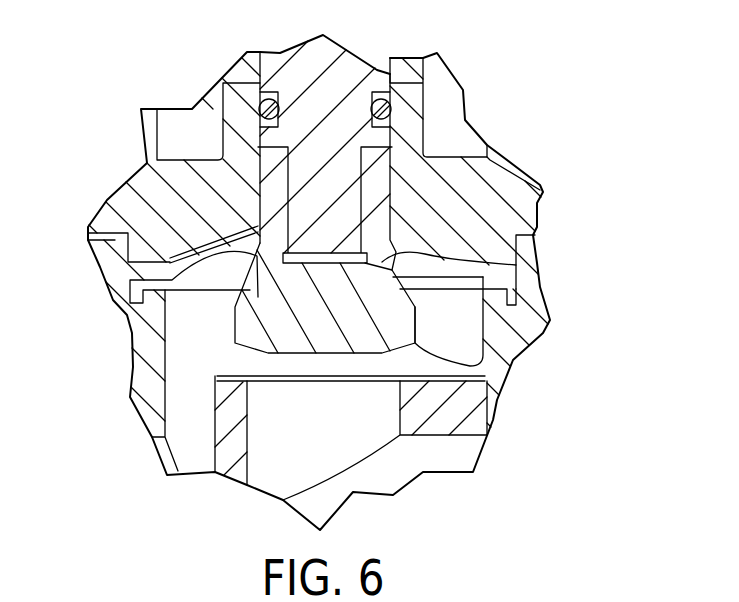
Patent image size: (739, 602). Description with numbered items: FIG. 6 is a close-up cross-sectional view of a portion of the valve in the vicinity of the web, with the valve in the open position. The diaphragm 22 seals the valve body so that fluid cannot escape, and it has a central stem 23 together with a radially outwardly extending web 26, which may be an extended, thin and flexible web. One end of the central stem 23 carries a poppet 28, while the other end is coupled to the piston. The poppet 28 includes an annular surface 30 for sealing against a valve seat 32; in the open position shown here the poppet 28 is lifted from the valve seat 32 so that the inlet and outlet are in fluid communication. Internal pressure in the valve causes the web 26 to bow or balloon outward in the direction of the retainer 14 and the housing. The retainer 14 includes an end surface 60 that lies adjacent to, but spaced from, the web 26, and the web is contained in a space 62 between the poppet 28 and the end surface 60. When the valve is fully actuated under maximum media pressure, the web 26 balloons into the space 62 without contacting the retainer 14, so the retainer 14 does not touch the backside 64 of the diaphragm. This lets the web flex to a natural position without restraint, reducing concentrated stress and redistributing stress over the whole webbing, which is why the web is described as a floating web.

The retainer 14 is at (140, 183).
The diaphragm 22 is at (372, 221).
The central stem 23 is at (267, 172).
The web 26 is at (450, 312).
The poppet 28 is at (397, 313).
The annular surface 30 is at (340, 340).
The valve seat 32 is at (402, 380).
The end surface 60 is at (168, 293).
The space 62 is at (470, 255).
The backside 64 is at (230, 292).